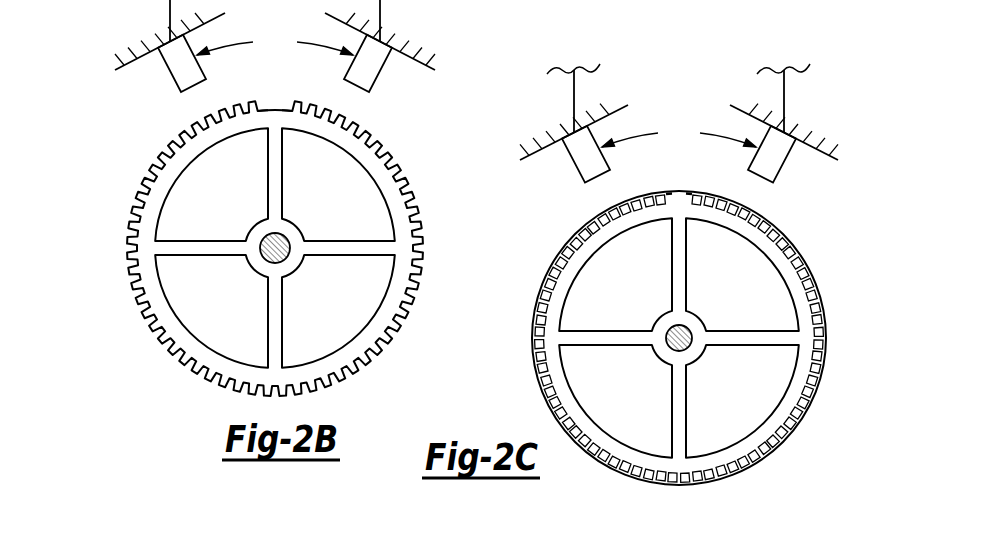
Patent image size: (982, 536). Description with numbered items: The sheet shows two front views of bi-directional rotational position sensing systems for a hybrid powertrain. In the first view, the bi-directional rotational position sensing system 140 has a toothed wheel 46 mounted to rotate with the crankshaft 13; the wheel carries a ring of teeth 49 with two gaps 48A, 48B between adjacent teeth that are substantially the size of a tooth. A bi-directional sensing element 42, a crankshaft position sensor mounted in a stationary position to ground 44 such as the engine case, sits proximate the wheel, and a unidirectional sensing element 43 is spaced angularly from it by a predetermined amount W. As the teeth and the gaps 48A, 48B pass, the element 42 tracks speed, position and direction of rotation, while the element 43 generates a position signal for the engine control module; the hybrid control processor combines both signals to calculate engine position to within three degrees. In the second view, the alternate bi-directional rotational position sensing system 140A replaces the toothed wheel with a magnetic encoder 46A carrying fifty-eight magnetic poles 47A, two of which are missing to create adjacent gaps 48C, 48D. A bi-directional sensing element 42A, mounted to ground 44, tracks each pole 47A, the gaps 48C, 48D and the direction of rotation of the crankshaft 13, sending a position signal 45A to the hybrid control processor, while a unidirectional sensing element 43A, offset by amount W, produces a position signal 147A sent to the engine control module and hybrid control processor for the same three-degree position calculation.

In FIG. 2B, the crankshaft 13 is at (273, 247).
In FIG. 2C, the crankshaft 13 is at (676, 334).
In FIG. 2B, the bi-directional sensing element 42 is at (382, 70).
In FIG. 2B, the unidirectional sensing element 43 is at (168, 70).
In FIG. 2B, the ground 44 is at (118, 60).
In FIG. 2C, the ground 44 is at (557, 132).
In FIG. 2B, the toothed wheel 46 is at (432, 156).
In FIG. 2B, the gap 48A is at (263, 108).
In FIG. 2B, the gap 48B is at (287, 108).
In FIG. 2B, the ratchet teeth 49 is at (147, 180).
In FIG. 2B, the bi-directional rotational position sensing system 140 is at (127, 346).
In FIG. 2C, the bi-directional sensing element 42A is at (792, 165).
In FIG. 2C, the unidirectional sensing element 43A is at (568, 165).
In FIG. 2C, the position signal 45A is at (783, 90).
In FIG. 2C, the position signal 147A is at (575, 90).
In FIG. 2C, the magnetic encoder 46A is at (820, 242).
In FIG. 2C, the magnetic poles 47A is at (563, 250).
In FIG. 2C, the gap 48C is at (668, 192).
In FIG. 2C, the gap 48D is at (692, 192).
In FIG. 2C, the bi-directional rotational position sensing system 140A is at (524, 411).
In FIG. 2B, the predetermined angular spacing W is at (275, 42).
In FIG. 2C, the predetermined angular spacing W is at (679, 133).